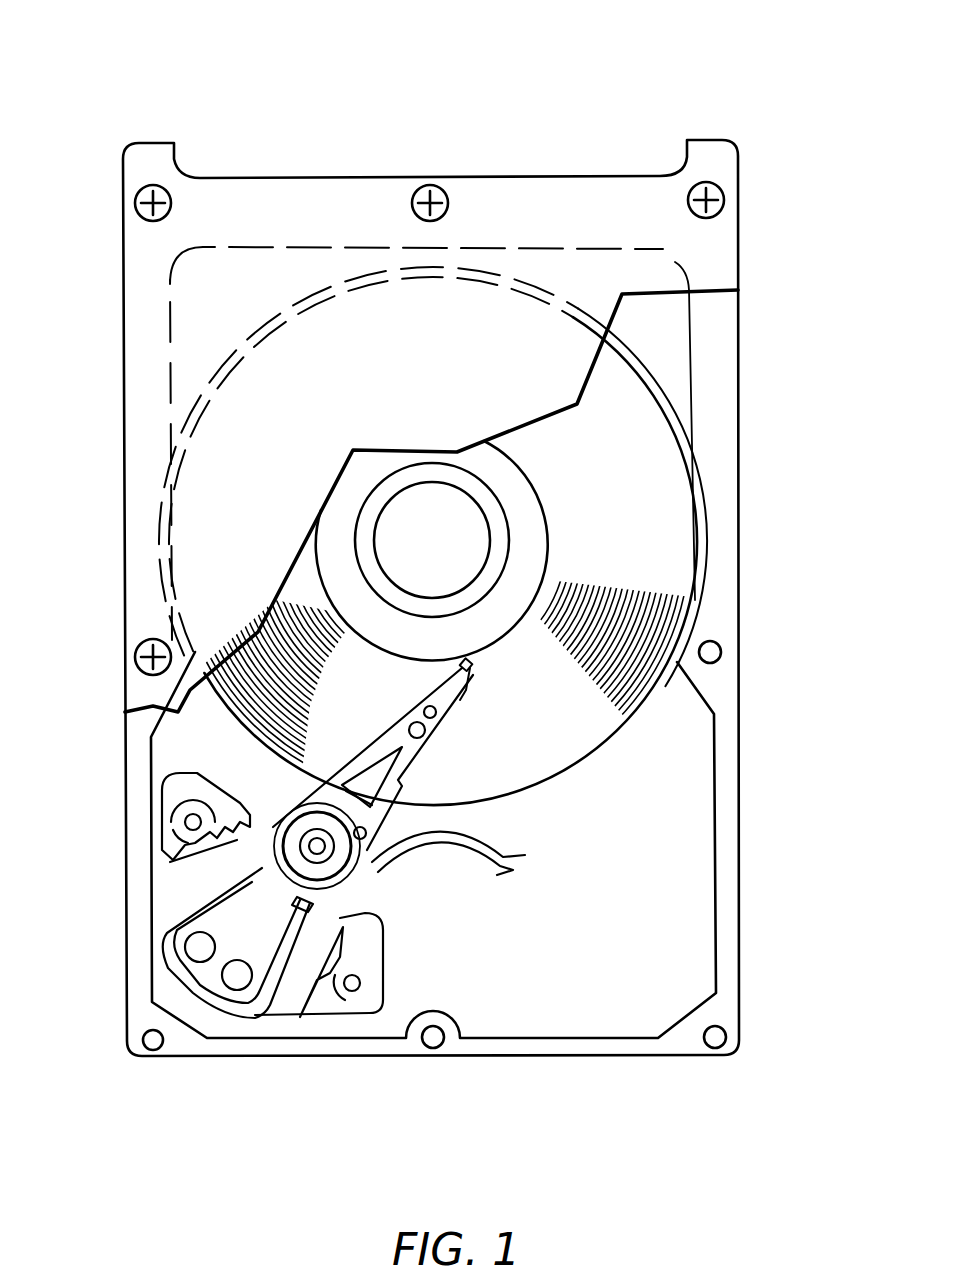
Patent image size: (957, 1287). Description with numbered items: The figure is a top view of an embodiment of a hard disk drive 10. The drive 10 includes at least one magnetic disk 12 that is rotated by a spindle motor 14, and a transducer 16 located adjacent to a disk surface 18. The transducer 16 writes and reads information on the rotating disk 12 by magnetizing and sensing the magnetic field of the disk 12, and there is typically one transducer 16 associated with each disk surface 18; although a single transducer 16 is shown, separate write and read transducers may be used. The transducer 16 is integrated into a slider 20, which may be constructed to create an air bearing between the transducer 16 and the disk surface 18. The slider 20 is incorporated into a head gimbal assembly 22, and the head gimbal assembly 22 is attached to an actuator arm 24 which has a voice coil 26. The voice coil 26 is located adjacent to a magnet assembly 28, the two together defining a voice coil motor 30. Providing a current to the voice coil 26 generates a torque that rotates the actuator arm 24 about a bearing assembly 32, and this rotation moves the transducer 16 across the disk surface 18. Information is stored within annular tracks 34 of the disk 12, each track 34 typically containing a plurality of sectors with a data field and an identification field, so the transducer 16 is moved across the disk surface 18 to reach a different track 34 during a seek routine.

The hard disk drive 10 is at (458, 566).
The magnetic disk 12 is at (640, 487).
The spindle motor 14 is at (432, 540).
The transducer 16 is at (478, 672).
The disk surface 18 is at (433, 536).
The slider 20 is at (468, 680).
The head gimbal assembly 22 is at (490, 697).
The actuator arm 24 is at (430, 757).
The voice coil 26 is at (183, 937).
The magnet assembly 28 is at (223, 877).
The voice coil motor 30 is at (283, 1017).
The bearing assembly 32 is at (321, 851).
The annular tracks 34 is at (253, 683).